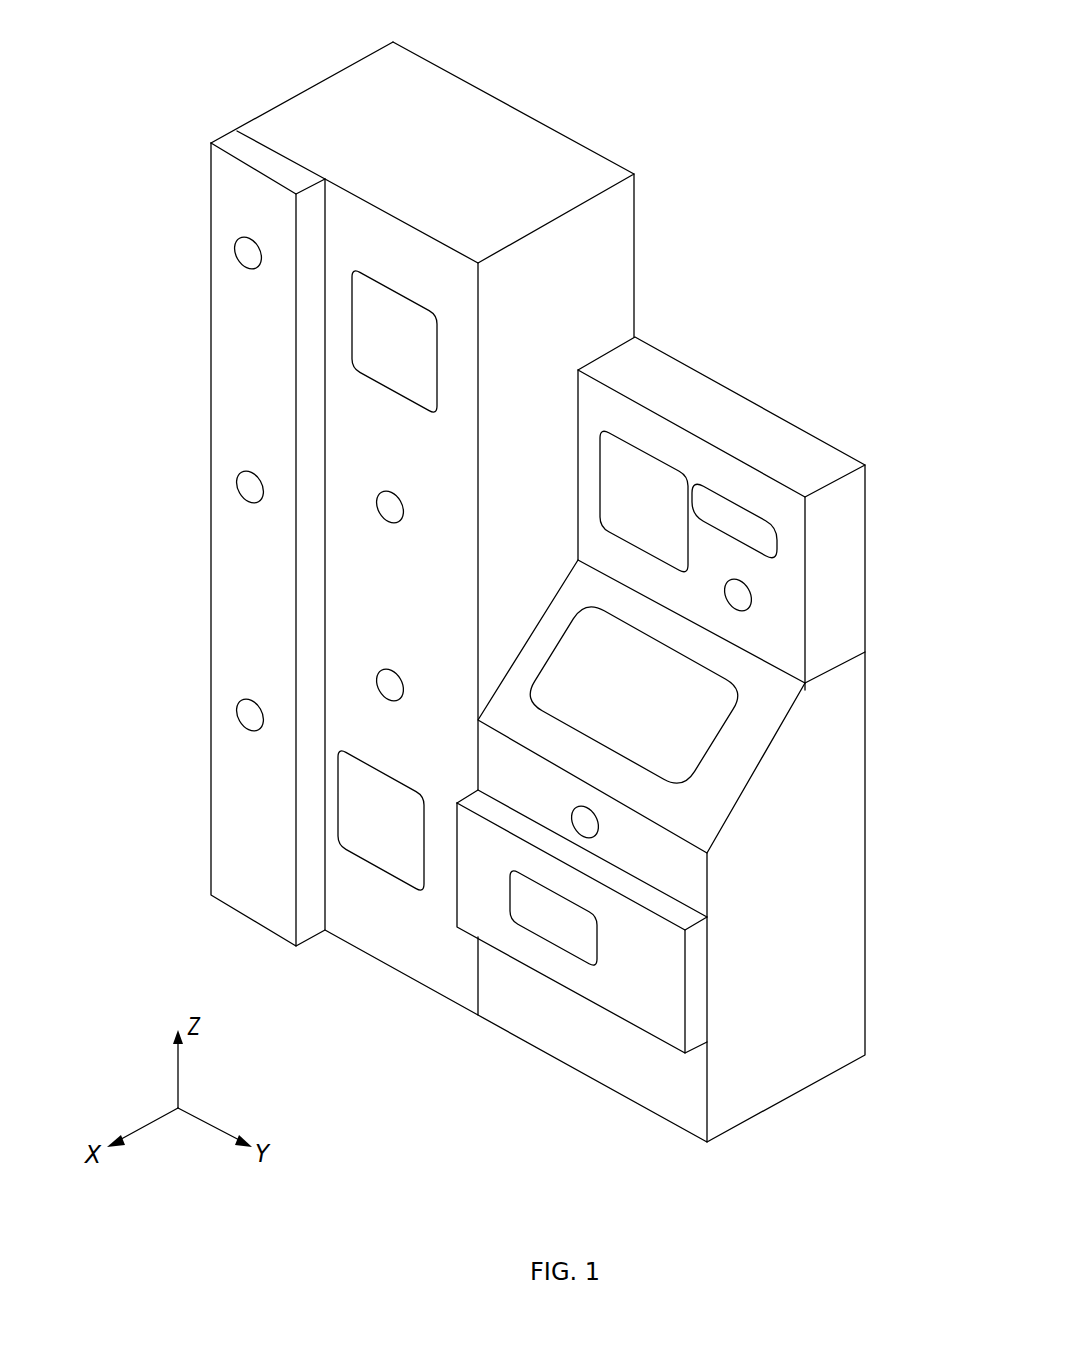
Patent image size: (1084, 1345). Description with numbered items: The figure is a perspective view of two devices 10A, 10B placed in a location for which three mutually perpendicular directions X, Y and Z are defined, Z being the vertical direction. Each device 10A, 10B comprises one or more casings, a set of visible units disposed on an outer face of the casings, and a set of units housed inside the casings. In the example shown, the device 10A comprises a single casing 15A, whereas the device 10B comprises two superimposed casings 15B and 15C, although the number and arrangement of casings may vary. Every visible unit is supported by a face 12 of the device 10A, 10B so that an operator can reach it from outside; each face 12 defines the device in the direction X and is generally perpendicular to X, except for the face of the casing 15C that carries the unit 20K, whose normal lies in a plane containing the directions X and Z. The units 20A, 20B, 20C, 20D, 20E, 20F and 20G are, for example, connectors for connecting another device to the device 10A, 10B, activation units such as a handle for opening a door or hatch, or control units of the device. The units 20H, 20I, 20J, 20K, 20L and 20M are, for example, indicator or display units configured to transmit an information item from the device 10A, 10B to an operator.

The device 10A is at (188, 638).
The device 10B is at (752, 375).
The face 12 is at (352, 407).
The casing 15A is at (299, 128).
The casing 15B is at (795, 1037).
The casing 15C is at (835, 562).
The visible unit 20A is at (248, 255).
The visible unit 20B is at (250, 488).
The visible unit 20C is at (250, 717).
The visible unit 20D is at (390, 690).
The visible unit 20E is at (390, 510).
The visible unit 20F is at (580, 818).
The visible unit 20G is at (743, 605).
The visible unit 20H is at (394, 341).
The visible unit 20I is at (409, 861).
The visible unit 20J is at (556, 925).
The visible unit 20K is at (634, 695).
The visible unit 20L is at (755, 530).
The visible unit 20M is at (644, 501).